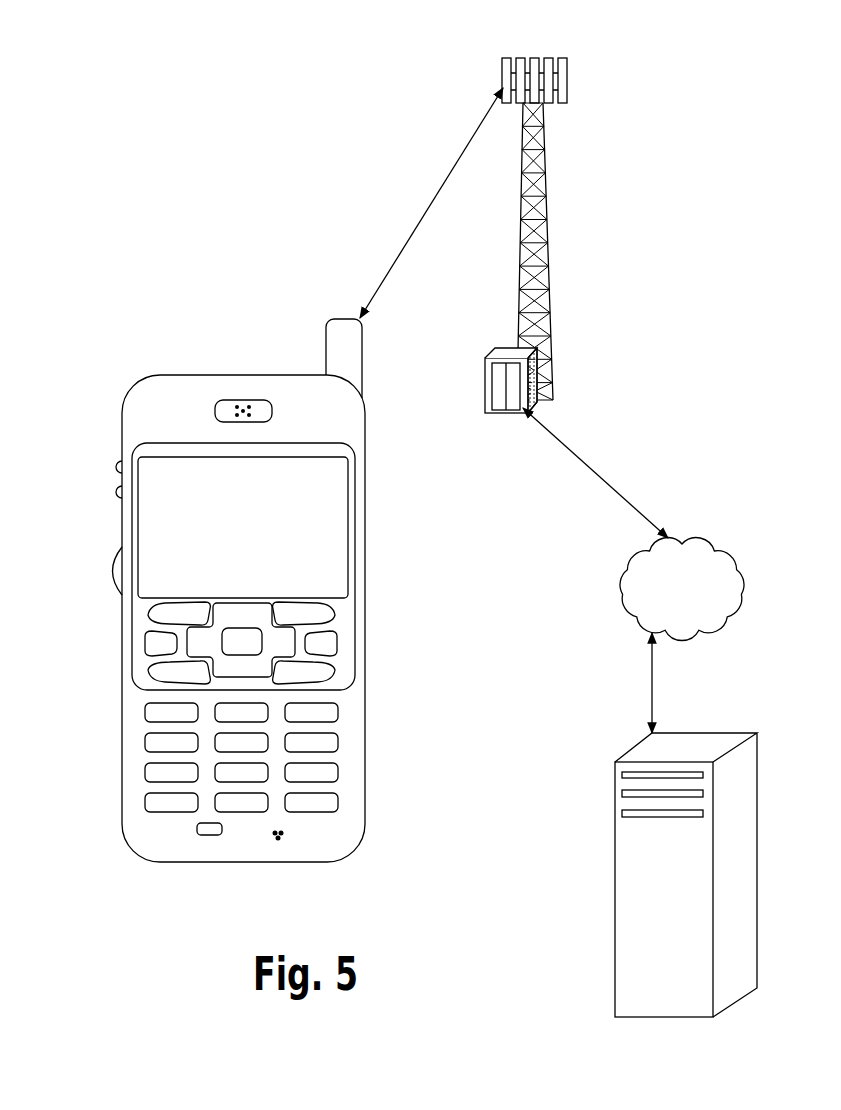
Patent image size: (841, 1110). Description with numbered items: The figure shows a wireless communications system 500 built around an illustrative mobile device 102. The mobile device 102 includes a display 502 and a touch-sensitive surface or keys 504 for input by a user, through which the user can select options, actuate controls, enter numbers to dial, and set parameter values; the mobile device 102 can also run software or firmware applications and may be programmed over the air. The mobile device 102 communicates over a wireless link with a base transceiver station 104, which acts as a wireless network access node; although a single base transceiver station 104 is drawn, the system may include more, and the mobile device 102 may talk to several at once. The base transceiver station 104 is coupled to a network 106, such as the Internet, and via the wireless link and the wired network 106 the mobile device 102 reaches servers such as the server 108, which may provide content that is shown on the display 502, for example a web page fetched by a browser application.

The wireless communications system 500 is at (352, 85).
The mobile device 102 is at (143, 843).
The display 502 is at (342, 503).
The keys 504 is at (110, 602).
The base transceiver station 104 is at (520, 252).
The network 106 is at (640, 618).
The server 108 is at (615, 842).